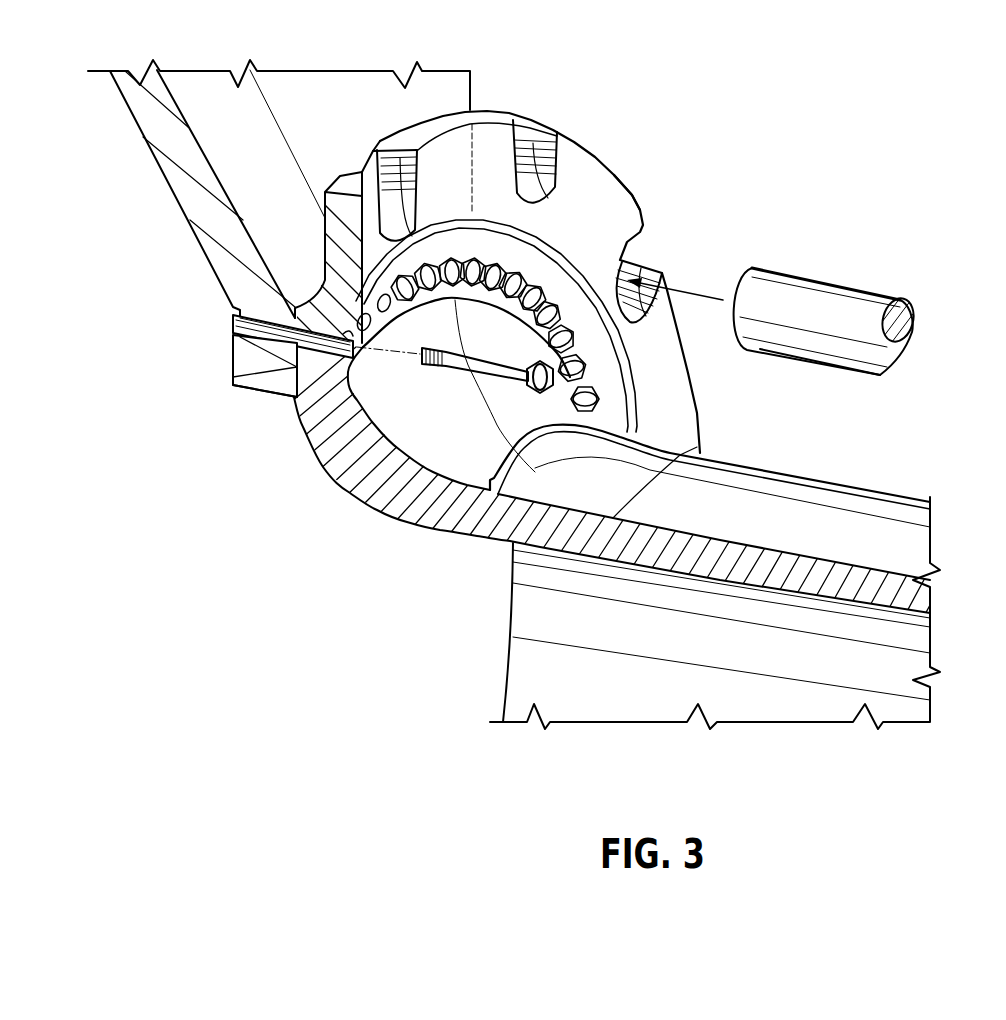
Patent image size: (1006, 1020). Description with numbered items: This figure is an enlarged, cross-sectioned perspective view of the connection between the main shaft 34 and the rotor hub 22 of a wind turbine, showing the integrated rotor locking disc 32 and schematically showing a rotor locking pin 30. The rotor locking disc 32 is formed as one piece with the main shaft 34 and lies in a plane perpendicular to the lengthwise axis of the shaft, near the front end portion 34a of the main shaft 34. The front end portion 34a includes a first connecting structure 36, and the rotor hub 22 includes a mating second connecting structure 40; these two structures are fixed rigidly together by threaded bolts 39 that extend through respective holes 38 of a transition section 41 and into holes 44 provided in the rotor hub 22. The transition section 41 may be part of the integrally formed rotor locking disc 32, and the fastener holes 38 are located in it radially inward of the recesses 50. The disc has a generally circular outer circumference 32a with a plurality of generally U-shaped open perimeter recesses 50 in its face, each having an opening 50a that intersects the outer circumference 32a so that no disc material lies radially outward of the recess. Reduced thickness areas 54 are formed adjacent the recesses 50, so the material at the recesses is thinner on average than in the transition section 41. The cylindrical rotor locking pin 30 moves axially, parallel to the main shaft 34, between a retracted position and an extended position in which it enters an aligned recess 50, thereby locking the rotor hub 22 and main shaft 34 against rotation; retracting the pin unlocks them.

The rotor hub 22 is at (121, 99).
The rotor locking pin 30 is at (835, 284).
The rotor locking disc 32 is at (584, 148).
The outer circumference 32a is at (633, 207).
The main shaft 34 is at (854, 555).
The front end portion 34a is at (233, 369).
The first connecting structure 36 is at (430, 127).
The hole 38 is at (366, 350).
The threaded bolt 39 is at (553, 377).
The second connecting structure 40 is at (267, 380).
The transition section 41 is at (333, 450).
The hole 44 is at (233, 318).
The recess 50 is at (536, 178).
The opening 50a is at (656, 251).
The reduced thickness area 54 is at (336, 220).